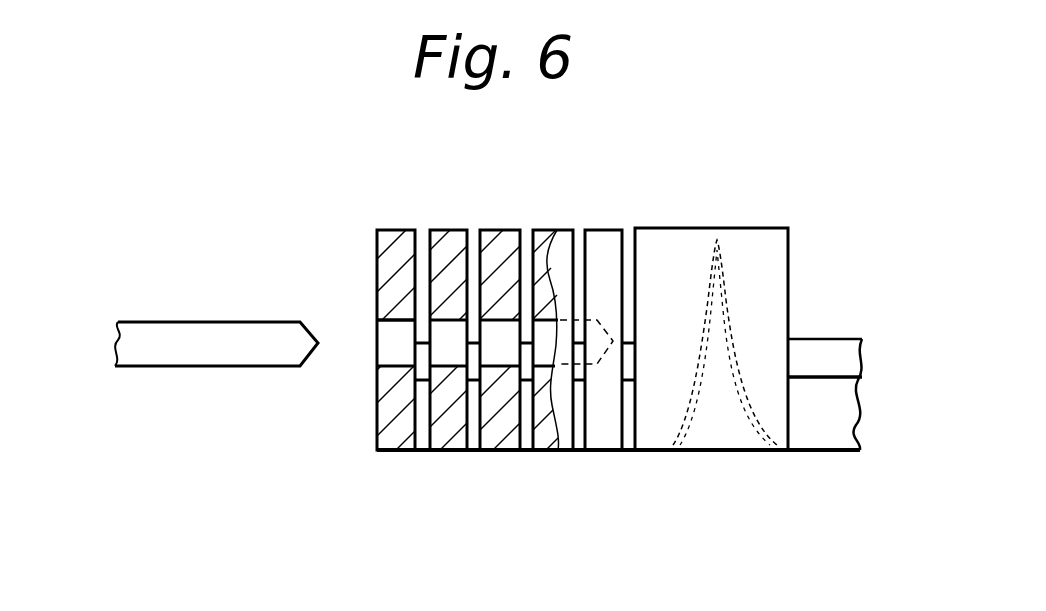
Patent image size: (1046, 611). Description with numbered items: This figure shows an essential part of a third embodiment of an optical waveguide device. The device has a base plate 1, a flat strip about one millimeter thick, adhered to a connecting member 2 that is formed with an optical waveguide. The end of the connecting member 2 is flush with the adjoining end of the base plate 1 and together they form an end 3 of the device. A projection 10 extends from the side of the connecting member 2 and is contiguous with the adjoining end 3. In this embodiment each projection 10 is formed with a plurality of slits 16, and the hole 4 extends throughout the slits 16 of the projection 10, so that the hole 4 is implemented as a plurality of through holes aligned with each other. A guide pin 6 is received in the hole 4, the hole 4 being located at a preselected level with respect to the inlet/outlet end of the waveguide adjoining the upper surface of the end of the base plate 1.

The base plate 1 is at (822, 357).
The connecting member 2 is at (720, 417).
The end 3 is at (377, 430).
The hole 4 is at (377, 338).
The guide pin 6 is at (210, 352).
The projection 10 is at (788, 240).
The slits 16 is at (628, 452).